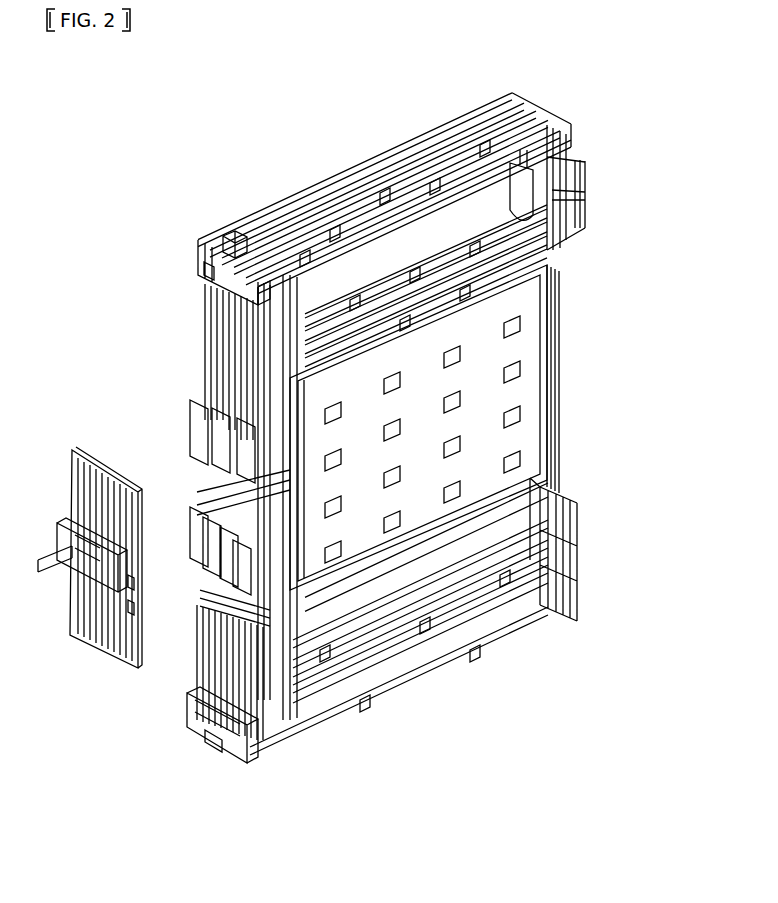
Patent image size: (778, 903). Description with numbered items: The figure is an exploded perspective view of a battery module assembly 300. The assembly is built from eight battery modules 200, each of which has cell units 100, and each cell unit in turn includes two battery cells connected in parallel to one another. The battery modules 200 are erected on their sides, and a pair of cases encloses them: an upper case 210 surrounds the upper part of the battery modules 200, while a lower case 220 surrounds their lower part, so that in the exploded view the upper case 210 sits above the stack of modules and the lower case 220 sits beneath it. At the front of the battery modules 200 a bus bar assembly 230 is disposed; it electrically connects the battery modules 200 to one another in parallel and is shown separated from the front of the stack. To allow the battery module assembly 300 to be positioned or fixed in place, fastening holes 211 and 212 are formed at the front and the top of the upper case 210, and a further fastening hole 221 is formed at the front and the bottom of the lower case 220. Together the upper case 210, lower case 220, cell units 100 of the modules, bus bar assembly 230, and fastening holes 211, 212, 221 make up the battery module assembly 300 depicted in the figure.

The battery module assembly 300 is at (72, 170).
The cell unit 100 is at (551, 283).
The battery module 200 is at (558, 375).
The upper case 210 is at (313, 212).
The fastening hole 211 is at (213, 279).
The fastening hole 212 is at (235, 230).
The lower case 220 is at (577, 568).
The fastening hole 221 is at (195, 725).
The bus bar assembly 230 is at (115, 438).